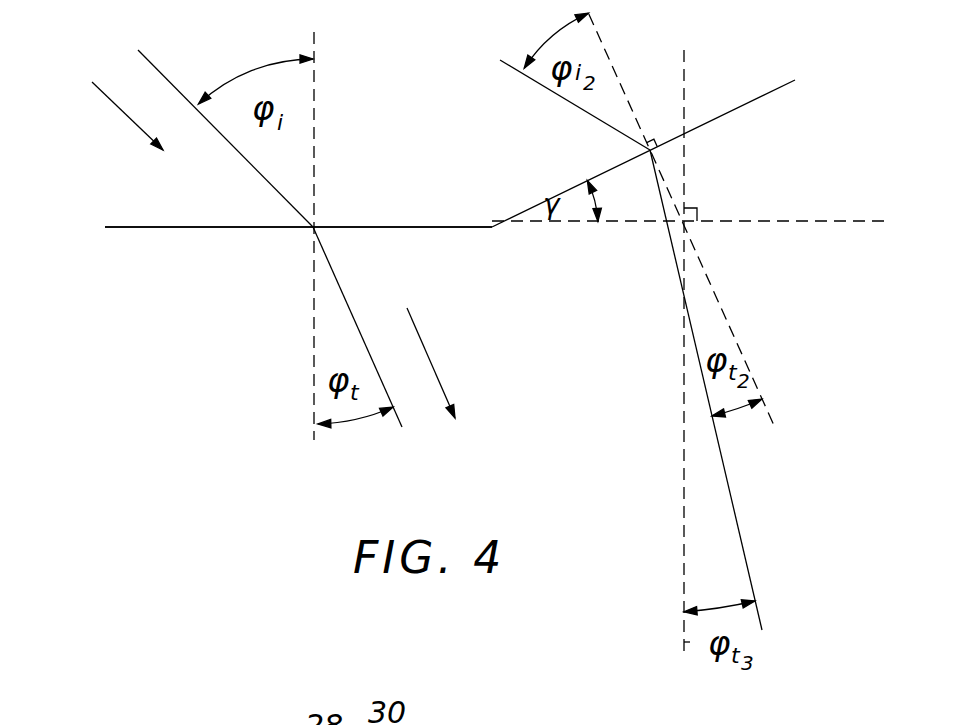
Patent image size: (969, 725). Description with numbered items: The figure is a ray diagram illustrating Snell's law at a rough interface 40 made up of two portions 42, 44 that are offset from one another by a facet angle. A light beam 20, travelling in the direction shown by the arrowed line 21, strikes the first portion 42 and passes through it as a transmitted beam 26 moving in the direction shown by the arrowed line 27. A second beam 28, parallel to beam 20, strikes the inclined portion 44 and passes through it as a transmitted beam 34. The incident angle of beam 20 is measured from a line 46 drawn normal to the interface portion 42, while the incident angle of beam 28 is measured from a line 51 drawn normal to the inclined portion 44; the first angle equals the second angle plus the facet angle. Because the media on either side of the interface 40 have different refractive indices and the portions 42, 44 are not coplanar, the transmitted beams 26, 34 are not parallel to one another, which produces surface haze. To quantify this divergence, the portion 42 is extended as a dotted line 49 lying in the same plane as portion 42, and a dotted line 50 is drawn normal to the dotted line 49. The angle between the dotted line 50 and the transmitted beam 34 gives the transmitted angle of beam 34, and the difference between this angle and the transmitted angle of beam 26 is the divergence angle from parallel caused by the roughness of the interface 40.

The light beam 20 is at (213, 130).
The arrowed line 21 is at (108, 100).
The transmitted beam 26 is at (335, 275).
The arrowed line 27 is at (417, 328).
The beam 28 is at (528, 77).
The transmitted beam 34 is at (722, 458).
The interface 40 is at (147, 224).
The portion of the interface 42 is at (203, 229).
The portion of the interface 44 is at (757, 100).
The line normal to the interface portion 46 is at (314, 33).
The dotted line 49 is at (808, 220).
The dotted line 50 is at (687, 643).
The normal to inclined surface 51 is at (610, 57).